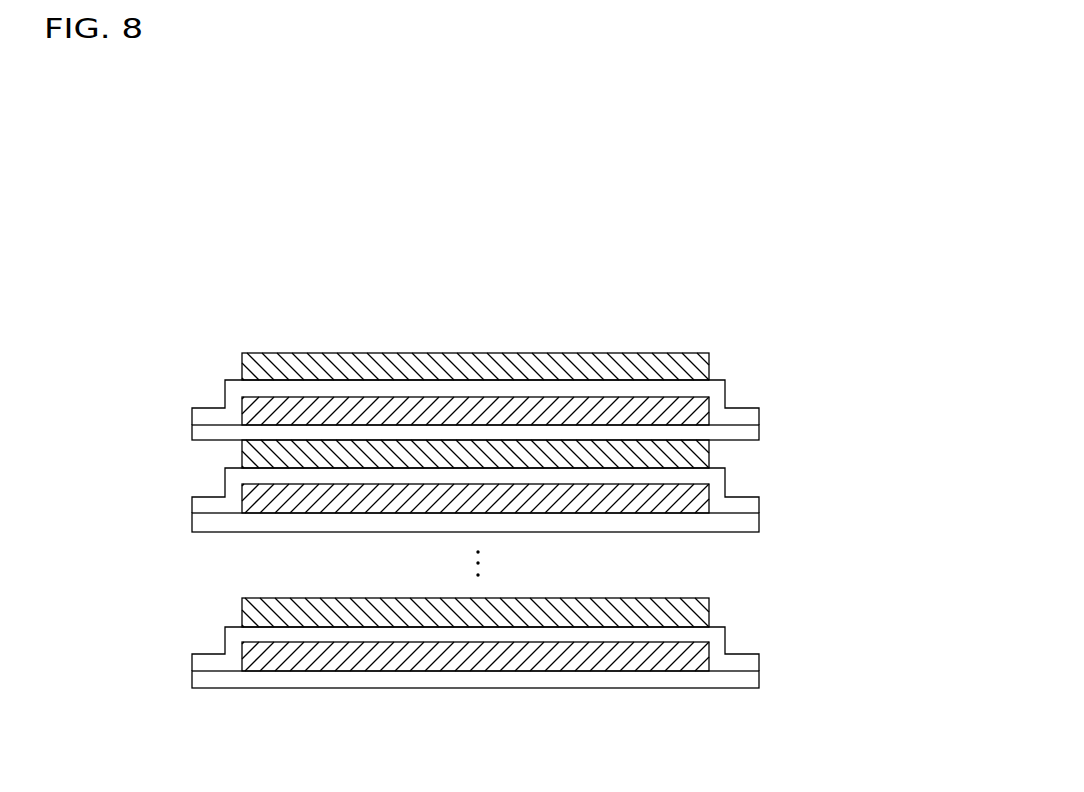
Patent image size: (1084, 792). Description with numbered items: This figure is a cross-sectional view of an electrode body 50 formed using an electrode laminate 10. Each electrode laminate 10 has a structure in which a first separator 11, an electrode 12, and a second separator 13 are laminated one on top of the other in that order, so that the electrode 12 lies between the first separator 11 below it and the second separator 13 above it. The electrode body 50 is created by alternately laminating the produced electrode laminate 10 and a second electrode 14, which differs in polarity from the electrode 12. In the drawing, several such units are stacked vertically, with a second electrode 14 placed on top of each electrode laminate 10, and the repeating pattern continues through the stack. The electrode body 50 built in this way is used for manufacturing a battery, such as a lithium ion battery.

The electrode body 50 is at (670, 287).
The electrode laminate 10 is at (575, 553).
The first separator 11 is at (759, 522).
The electrode 12 is at (759, 503).
The second separator 13 is at (725, 480).
The second electrode 14 is at (709, 455).